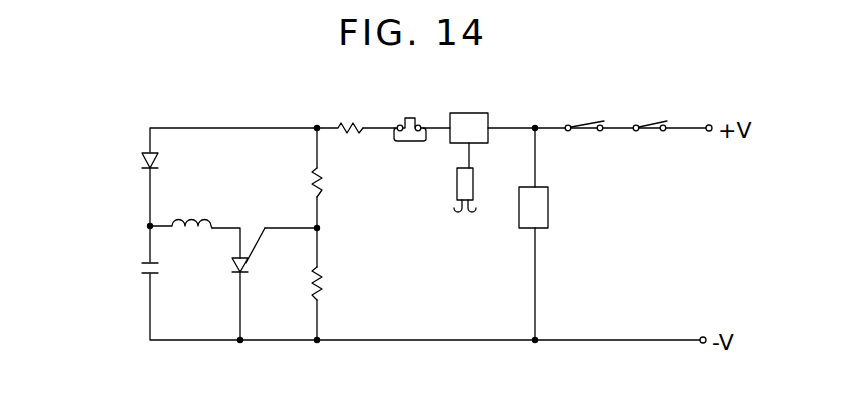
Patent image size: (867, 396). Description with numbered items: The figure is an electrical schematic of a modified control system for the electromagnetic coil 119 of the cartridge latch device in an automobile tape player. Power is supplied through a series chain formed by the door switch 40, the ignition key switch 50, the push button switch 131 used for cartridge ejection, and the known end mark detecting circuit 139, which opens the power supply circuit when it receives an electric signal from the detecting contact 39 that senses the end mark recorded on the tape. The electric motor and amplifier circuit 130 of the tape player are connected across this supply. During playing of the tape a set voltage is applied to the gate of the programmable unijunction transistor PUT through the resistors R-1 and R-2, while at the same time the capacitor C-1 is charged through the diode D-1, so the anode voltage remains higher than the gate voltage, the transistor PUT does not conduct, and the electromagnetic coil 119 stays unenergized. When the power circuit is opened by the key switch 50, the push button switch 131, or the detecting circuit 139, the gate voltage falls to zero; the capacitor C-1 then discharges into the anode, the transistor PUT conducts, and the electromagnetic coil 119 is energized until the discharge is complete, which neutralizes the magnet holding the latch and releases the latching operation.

The electromagnetic coil 119 is at (200, 226).
The push button switch 131 is at (417, 141).
The end mark detecting circuit 139 is at (469, 113).
The detecting contact 39 is at (457, 181).
The electric motor and amplifier circuit 130 is at (548, 214).
The door switch 40 is at (581, 134).
The ignition key switch 50 is at (649, 134).
The diode D-1 is at (142, 160).
The capacitor C-1 is at (142, 268).
The resistor R-1 is at (312, 176).
The resistor R-2 is at (323, 283).
The programmable unijunction transistor PUT is at (232, 265).